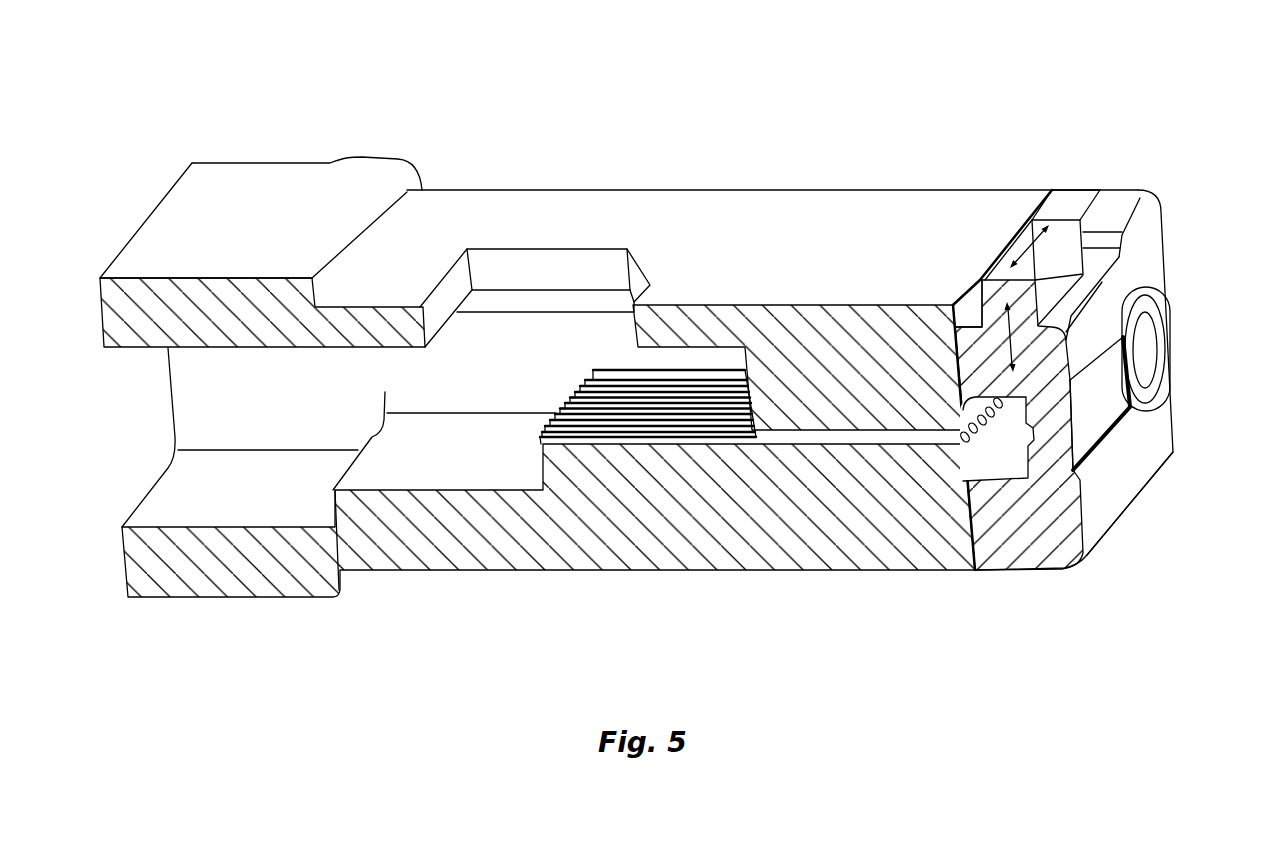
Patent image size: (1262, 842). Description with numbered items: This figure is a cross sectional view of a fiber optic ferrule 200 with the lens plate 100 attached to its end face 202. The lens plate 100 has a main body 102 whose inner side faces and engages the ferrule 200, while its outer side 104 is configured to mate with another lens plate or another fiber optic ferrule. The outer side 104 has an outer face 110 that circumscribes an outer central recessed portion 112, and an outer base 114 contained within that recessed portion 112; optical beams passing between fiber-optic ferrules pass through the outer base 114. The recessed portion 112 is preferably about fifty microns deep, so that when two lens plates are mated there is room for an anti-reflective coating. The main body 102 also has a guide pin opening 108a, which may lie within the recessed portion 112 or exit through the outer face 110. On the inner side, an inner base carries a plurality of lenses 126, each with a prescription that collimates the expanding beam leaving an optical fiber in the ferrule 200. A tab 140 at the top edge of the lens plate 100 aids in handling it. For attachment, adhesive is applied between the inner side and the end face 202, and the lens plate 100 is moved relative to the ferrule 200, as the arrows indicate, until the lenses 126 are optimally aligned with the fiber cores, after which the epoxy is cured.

The fiber optic ferrule 200 is at (839, 160).
The lens plate 100 is at (1170, 138).
The tab 140 is at (1012, 248).
The main body 102 is at (1165, 222).
The guide pin opening 108a is at (1145, 347).
The outer face 110 is at (1168, 403).
The outer side 104 is at (1160, 443).
The outer central recessed portion 112 is at (1124, 420).
The outer base 114 is at (1102, 420).
The end face 202 is at (977, 468).
The plurality of lenses 126 is at (1021, 445).